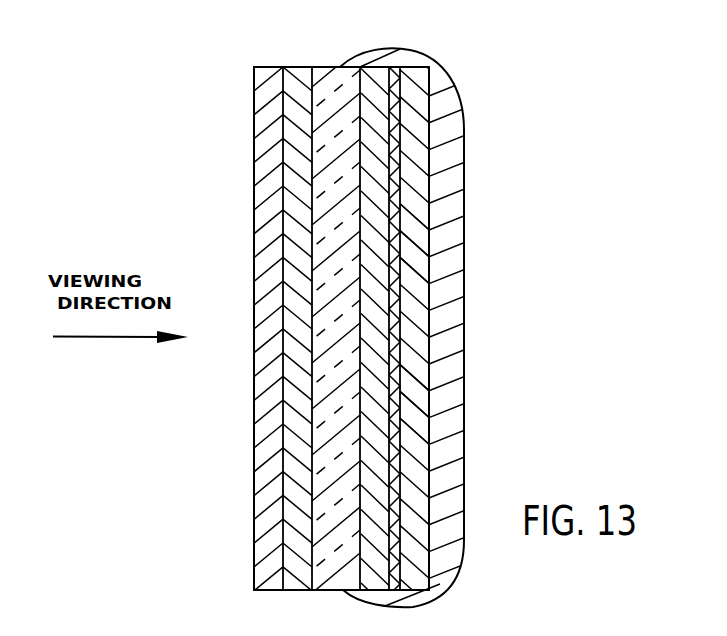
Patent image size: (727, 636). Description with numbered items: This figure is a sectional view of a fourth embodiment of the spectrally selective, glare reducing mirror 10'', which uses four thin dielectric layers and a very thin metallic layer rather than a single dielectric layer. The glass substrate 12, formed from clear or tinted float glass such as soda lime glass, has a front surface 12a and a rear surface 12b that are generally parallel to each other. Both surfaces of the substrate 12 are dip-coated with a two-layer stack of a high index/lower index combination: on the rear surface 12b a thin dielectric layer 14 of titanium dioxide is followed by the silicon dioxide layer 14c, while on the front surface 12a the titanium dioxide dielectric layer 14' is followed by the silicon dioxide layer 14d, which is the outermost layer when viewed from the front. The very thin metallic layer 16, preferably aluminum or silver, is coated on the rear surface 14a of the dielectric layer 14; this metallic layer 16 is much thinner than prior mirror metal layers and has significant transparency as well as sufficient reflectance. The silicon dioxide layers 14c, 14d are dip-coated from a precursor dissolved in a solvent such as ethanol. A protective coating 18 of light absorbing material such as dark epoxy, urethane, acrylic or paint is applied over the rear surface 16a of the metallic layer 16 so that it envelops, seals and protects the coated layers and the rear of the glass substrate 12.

The mirror 10'' is at (387, 305).
The glass substrate 12 is at (317, 200).
The front surface of glass substrate 12a is at (315, 512).
The rear surface of glass substrate 12b is at (362, 305).
The dielectric layer 14 is at (458, 324).
The dielectric layer 14' is at (247, 329).
The rear surface of dielectric layer 14a is at (413, 385).
The silicon dioxide layer 14c is at (412, 253).
The silicon dioxide layer 14d is at (267, 418).
The metallic layer 16 is at (395, 205).
The rear surface of metallic layer 16a is at (402, 418).
The protective coating 18 is at (447, 97).